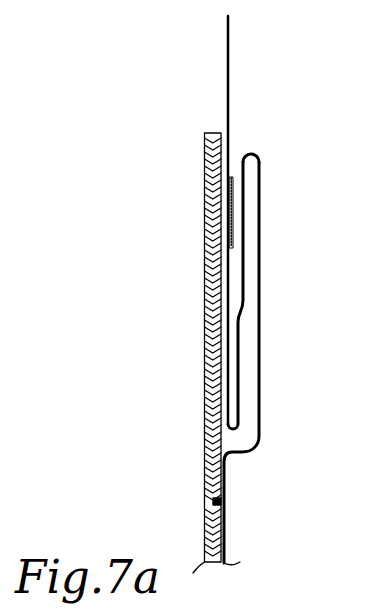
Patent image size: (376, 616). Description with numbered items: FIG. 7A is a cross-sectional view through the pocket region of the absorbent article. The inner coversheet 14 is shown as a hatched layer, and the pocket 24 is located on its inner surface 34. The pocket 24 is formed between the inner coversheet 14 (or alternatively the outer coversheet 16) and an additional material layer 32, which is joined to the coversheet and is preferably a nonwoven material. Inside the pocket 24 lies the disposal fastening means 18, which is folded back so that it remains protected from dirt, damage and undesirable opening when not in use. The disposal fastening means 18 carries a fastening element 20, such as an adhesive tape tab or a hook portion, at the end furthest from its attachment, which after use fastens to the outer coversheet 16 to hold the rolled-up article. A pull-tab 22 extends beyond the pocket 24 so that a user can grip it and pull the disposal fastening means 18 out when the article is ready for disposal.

The inner coversheet 14 is at (222, 518).
The outer coversheet 16 is at (204, 461).
The disposal fastening means 18 is at (240, 370).
The fastening element 20 is at (233, 201).
The pull-tab 22 is at (230, 73).
The pocket 24 is at (283, 333).
The additional material layer 32 is at (261, 289).
The inner surface 34 is at (232, 548).